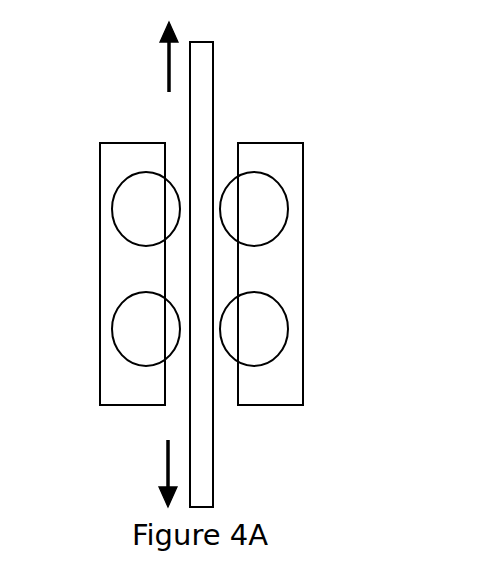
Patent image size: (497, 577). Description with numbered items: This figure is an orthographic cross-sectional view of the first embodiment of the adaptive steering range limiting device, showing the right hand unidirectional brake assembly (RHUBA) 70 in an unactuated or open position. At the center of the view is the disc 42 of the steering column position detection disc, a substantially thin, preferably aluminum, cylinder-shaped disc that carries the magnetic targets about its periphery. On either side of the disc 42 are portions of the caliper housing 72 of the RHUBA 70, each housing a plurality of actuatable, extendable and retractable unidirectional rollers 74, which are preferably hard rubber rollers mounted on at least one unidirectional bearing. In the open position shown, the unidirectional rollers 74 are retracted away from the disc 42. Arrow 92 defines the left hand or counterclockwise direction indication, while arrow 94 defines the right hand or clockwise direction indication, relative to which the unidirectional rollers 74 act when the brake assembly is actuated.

The disc 42 is at (213, 60).
The right hand unidirectional brake assembly (RHUBA) 70 is at (195, 255).
The caliper housing 72 is at (100, 267).
The unidirectional roller 74 is at (256, 212).
The left hand or counterclockwise direction indication arrow 92 is at (160, 63).
The right hand or clockwise direction indication arrow 94 is at (162, 478).